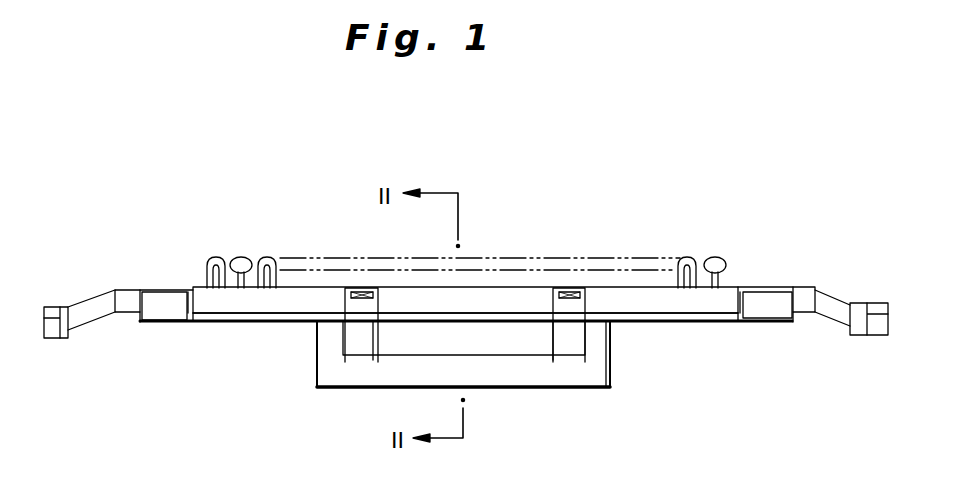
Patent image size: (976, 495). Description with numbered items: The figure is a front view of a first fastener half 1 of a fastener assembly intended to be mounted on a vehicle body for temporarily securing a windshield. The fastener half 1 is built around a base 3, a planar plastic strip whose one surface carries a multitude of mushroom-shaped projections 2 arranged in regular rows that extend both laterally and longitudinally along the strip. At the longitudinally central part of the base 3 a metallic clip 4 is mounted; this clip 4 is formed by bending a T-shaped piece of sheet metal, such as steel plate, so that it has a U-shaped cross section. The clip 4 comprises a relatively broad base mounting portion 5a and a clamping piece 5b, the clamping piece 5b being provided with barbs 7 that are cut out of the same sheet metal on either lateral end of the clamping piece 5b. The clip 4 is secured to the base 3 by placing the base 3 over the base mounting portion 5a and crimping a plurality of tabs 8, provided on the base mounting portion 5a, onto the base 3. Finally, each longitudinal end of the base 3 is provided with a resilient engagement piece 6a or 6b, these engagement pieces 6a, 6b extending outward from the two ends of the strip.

The fastener half 1 is at (700, 183).
The mushroom-shaped projections 2 is at (275, 258).
The base 3 is at (238, 306).
The metallic clip 4 is at (614, 353).
The base mounting portion 5a is at (722, 315).
The clamping piece 5b is at (613, 380).
The resilient engagement piece 6a is at (93, 300).
The resilient engagement piece 6b is at (840, 297).
The barbs 7 is at (327, 345).
The tabs 8 is at (357, 292).